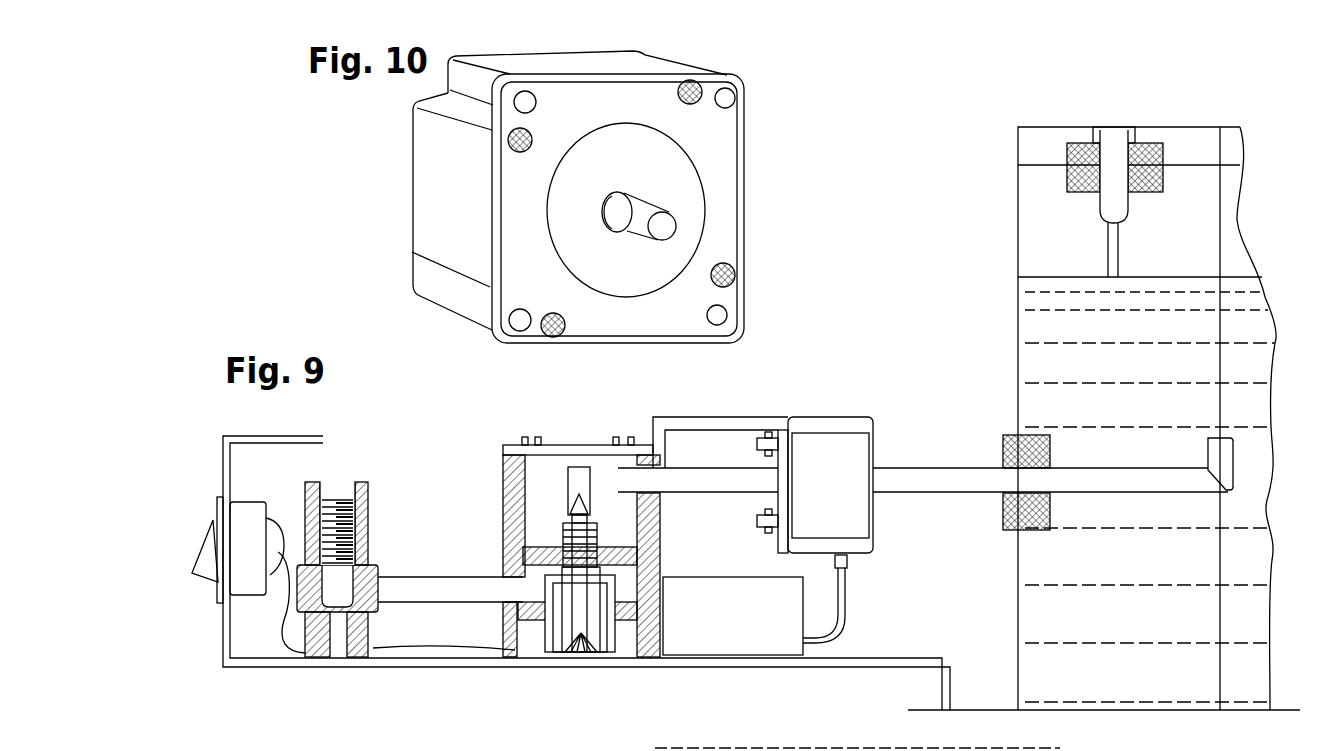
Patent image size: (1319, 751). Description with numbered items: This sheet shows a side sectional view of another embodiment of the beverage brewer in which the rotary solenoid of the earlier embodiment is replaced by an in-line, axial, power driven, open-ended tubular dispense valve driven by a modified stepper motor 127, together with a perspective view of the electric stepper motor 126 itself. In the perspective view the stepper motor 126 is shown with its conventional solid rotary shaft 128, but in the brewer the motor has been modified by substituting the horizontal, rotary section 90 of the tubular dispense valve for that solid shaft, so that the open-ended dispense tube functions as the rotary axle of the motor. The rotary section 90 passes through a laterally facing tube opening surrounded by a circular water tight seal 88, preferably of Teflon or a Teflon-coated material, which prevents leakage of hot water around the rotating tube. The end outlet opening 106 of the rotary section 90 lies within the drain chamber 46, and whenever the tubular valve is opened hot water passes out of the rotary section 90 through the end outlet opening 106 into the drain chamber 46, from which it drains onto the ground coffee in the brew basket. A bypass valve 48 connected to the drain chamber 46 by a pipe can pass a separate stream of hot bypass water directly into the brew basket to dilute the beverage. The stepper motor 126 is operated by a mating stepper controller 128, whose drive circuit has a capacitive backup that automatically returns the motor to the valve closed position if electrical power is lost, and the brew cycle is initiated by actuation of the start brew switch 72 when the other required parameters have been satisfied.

In FIG. 9, the drain chamber 46 is at (503, 510).
In FIG. 9, the bypass valve 48 is at (370, 538).
In FIG. 9, the start brew switch 72 is at (202, 556).
In FIG. 9, the circular water tight seal 88 is at (1000, 435).
In FIG. 9, the horizontal rotary section 90 is at (692, 478).
In FIG. 9, the end outlet opening 106 is at (615, 478).
In FIG. 10, the stepper motor 126 is at (722, 158).
In FIG. 9, the modified stepper motor 127 is at (832, 443).
In FIG. 10, the stepper controller 128 is at (667, 227).
In FIG. 9, the stepper controller 128 is at (675, 583).